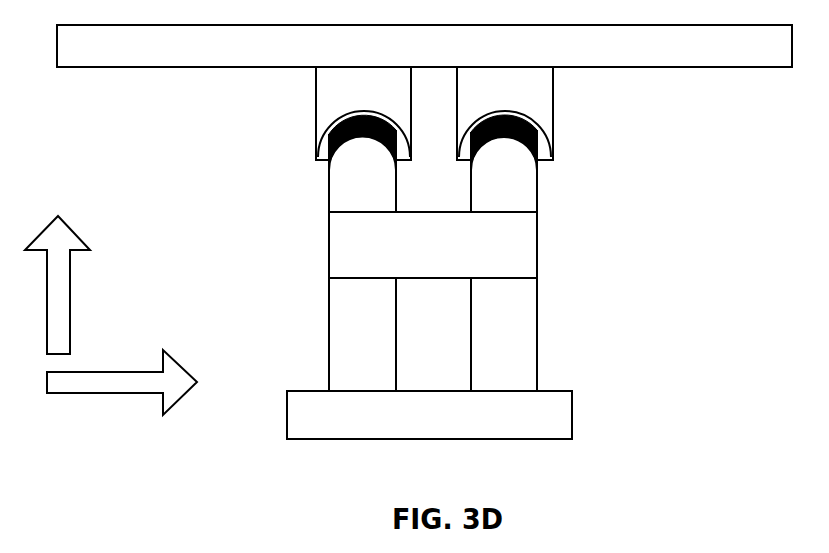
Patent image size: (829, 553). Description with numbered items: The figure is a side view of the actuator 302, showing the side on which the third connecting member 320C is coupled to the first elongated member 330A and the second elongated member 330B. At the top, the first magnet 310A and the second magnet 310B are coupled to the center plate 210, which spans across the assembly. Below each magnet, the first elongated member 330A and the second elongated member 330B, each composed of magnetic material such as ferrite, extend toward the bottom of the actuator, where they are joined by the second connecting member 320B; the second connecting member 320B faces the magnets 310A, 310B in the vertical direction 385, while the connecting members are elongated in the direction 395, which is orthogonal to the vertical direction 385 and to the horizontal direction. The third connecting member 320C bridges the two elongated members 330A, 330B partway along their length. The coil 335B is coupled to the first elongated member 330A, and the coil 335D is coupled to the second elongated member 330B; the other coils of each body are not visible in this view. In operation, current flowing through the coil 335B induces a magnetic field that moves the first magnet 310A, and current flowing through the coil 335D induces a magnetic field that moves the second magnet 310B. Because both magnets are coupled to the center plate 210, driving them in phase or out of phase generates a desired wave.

The center plate 210 is at (760, 58).
The actuator 302 is at (158, 111).
The first magnet 310A is at (530, 95).
The second magnet 310B is at (388, 95).
The second connecting member 320B is at (599, 417).
The third connecting member 320C is at (323, 243).
The first elongated member 330A is at (541, 187).
The second elongated member 330B is at (316, 187).
The coil 335B is at (507, 142).
The coil 335D is at (357, 140).
The vertical direction 385 is at (67, 285).
The direction 395 is at (122, 391).